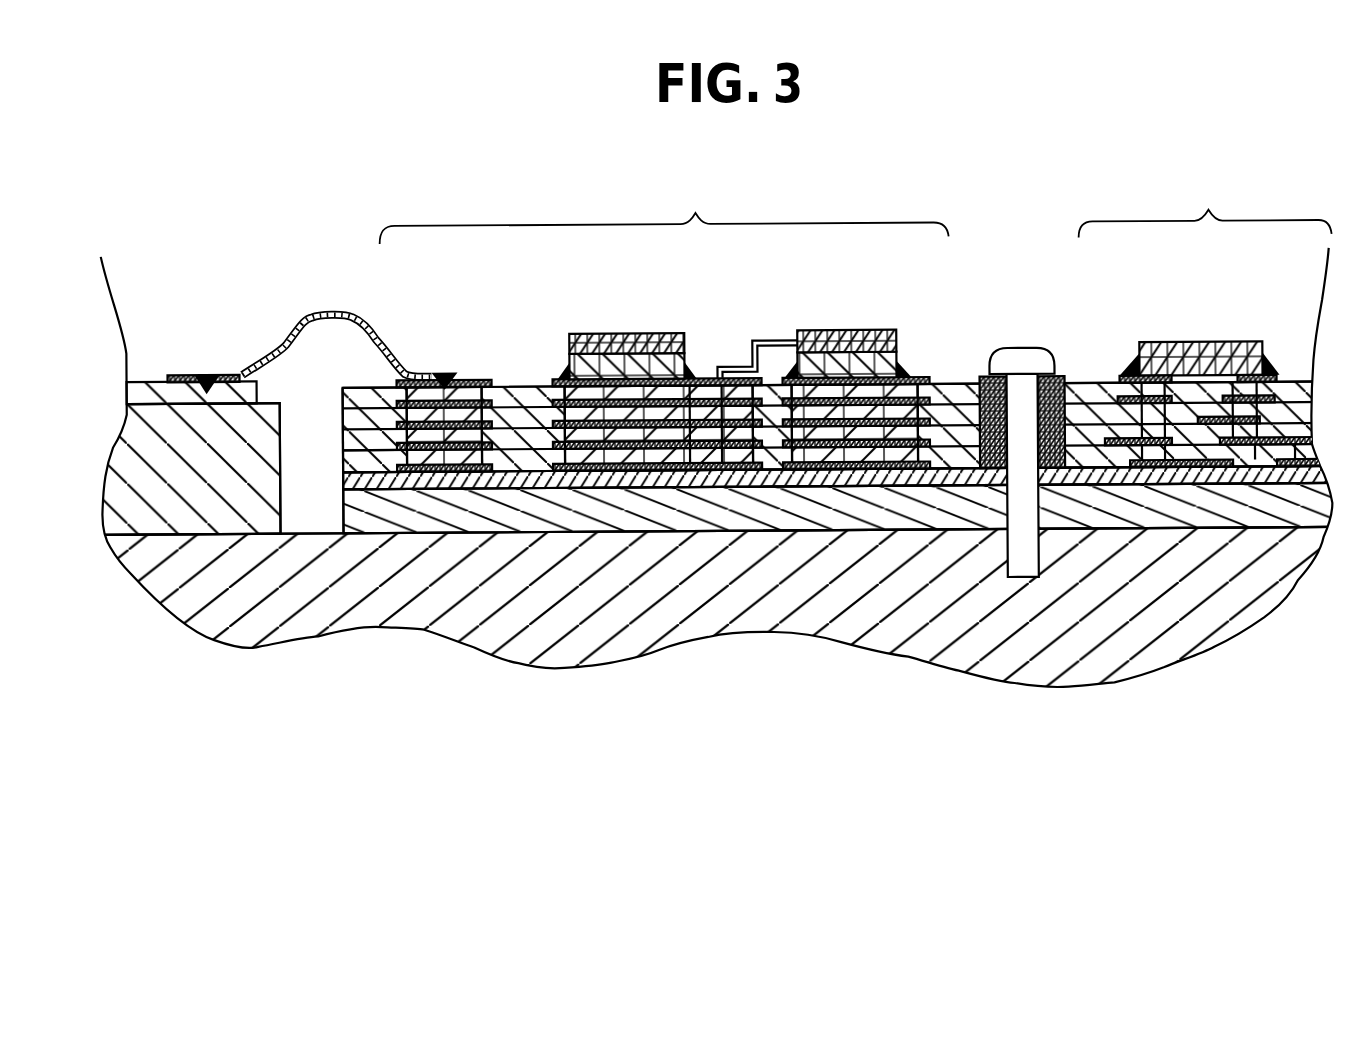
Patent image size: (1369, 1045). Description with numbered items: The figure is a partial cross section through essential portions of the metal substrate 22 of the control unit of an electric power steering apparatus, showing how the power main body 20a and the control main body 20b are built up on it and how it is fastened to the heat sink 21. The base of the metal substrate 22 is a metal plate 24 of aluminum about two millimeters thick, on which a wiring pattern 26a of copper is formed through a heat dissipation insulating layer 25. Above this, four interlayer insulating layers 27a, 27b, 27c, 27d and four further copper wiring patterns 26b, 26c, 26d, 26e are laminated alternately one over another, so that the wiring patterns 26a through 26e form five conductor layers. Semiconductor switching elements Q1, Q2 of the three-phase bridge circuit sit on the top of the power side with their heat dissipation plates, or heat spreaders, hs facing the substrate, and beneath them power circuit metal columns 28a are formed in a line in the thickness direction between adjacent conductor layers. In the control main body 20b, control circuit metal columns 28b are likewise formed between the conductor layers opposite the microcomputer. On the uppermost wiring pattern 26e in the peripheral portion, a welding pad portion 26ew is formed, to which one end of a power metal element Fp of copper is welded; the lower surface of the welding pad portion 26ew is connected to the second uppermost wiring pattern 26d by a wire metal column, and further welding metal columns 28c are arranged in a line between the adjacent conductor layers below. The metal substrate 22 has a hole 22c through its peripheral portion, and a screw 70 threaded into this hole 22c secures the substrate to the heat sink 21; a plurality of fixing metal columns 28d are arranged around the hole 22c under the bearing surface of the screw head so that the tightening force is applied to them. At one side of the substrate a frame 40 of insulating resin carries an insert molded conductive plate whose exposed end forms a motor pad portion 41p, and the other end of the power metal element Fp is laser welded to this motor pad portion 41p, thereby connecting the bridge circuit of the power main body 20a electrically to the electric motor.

The power main body 20a is at (663, 211).
The control main body 20b is at (1204, 205).
The heat sink 21 is at (1097, 645).
The metal substrate 22 is at (335, 505).
The hole 22c is at (1010, 492).
The metal plate 24 is at (645, 508).
The heat dissipation insulating layer 25 is at (870, 455).
The wiring pattern 26a is at (540, 480).
The wiring pattern 26b is at (579, 473).
The wiring pattern 26c is at (608, 444).
The wiring pattern 26d is at (755, 341).
The wiring pattern 26e is at (607, 350).
The welding pad portion 26ew is at (462, 378).
The interlayer insulating layer 27a is at (372, 460).
The interlayer insulating layer 27b is at (343, 440).
The interlayer insulating layer 27c is at (343, 418).
The interlayer insulating layer 27d is at (365, 393).
The power circuit metal column 28a is at (708, 448).
The control circuit metal column 28b is at (1245, 392).
The welding metal column 28c is at (462, 462).
The fixing metal column 28d is at (1158, 462).
The frame 40 is at (207, 506).
The motor pad portion 41p is at (172, 392).
The screw 70 is at (1022, 352).
The power metal element Fp is at (335, 310).
The heat dissipation plate hs is at (590, 362).
The semiconductor switching element Q1 is at (840, 331).
The semiconductor switching element Q2 is at (660, 333).